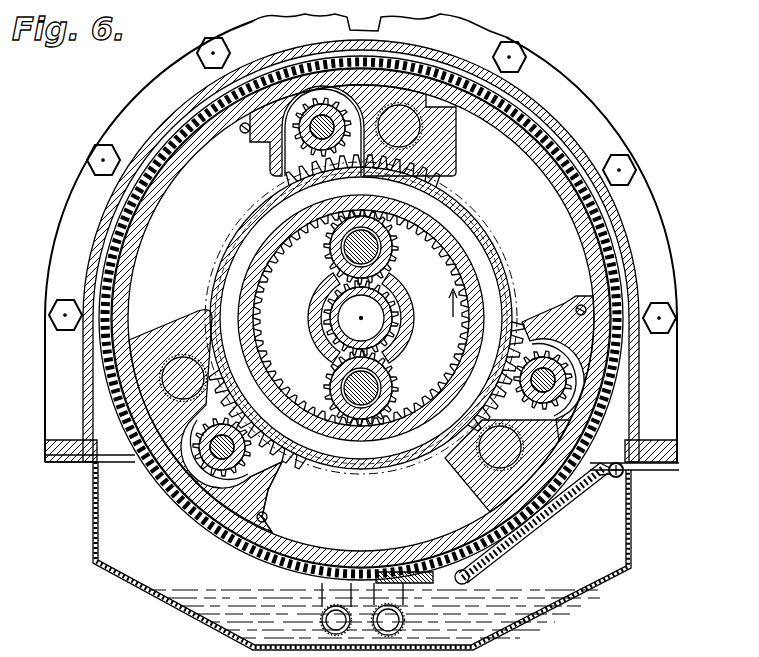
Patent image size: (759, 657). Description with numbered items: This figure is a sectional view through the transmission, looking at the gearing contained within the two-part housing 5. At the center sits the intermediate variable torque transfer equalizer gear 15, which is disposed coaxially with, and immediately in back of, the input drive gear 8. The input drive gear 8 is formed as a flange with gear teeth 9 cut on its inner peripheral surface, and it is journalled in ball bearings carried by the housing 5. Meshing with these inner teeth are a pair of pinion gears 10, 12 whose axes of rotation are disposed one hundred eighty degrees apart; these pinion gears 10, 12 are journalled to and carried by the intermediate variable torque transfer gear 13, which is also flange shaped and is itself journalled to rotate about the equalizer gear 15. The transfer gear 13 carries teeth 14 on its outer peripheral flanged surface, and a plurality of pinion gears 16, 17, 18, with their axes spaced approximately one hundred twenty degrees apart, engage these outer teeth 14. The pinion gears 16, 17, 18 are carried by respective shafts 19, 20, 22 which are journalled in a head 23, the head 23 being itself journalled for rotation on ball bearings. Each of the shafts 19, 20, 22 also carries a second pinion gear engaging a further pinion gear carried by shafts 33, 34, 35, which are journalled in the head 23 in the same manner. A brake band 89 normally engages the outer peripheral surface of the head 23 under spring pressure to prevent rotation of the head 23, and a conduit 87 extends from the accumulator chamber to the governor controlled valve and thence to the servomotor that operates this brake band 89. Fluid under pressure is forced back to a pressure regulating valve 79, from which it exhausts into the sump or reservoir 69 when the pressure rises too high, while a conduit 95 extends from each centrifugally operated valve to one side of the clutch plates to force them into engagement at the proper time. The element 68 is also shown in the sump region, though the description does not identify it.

The two-part housing 5 is at (640, 203).
The input drive gear 8 is at (398, 247).
The gear teeth 9 is at (456, 241).
The pinion gear 10 is at (461, 210).
The pinion gear 12 is at (374, 427).
The intermediate variable torque transfer gear 13 is at (510, 288).
The teeth 14 is at (300, 183).
The intermediate variable torque transfer equalizer gear 15 is at (396, 336).
The pinion gear 16 is at (252, 142).
The pinion gear 17 is at (180, 472).
The pinion gear 18 is at (575, 378).
The shaft 19 is at (293, 152).
The shaft 20 is at (214, 480).
The shaft 22 is at (560, 396).
The head 23 is at (503, 33).
The shaft 33 is at (420, 135).
The shaft 34 is at (178, 360).
The shaft 35 is at (490, 506).
The pipe 68 is at (405, 620).
The sump or reservoir 69 is at (536, 613).
The pressure regulating valve 79 is at (322, 612).
The conduit 87 is at (612, 477).
The brake band 89 is at (520, 538).
The conduit 95 is at (240, 126).